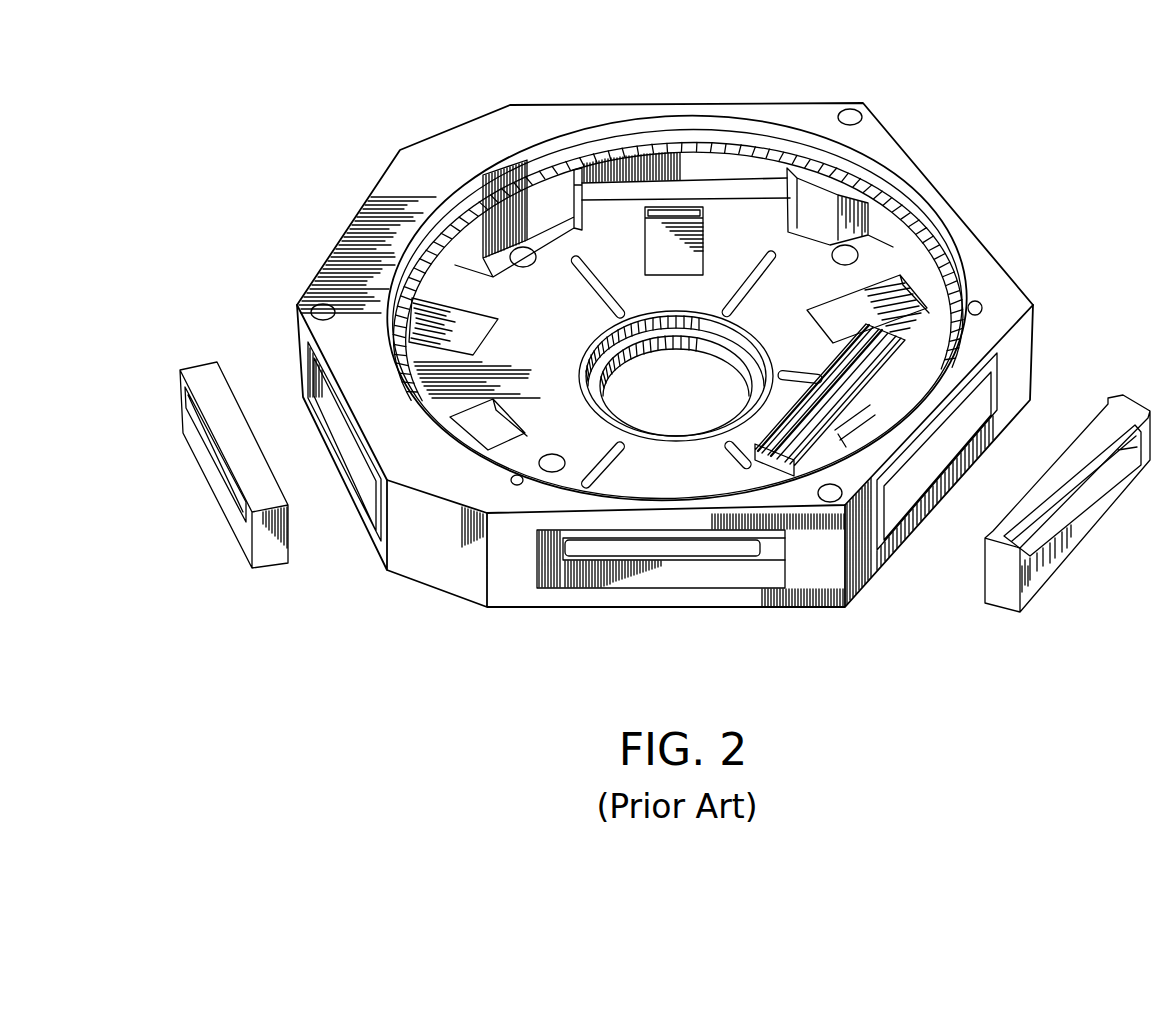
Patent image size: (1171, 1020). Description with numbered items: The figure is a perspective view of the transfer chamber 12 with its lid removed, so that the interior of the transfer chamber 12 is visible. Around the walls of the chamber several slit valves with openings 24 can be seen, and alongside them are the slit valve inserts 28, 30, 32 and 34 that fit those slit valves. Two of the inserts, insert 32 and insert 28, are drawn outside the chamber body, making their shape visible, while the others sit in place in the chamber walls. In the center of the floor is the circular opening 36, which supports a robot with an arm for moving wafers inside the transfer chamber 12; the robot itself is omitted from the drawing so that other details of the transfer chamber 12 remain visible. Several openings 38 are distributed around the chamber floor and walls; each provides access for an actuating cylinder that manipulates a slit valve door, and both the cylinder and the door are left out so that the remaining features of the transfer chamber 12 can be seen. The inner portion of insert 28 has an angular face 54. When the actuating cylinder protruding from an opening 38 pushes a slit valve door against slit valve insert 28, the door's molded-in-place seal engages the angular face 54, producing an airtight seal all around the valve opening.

The transfer chamber 12 is at (890, 130).
The slit valve openings 24 is at (673, 158).
The slit valve insert 28 is at (905, 398).
The slit valve insert 30 is at (740, 577).
The slit valve insert 32 is at (242, 553).
The slit valve insert 34 is at (918, 282).
The circular opening 36 is at (656, 402).
The openings 38 is at (676, 258).
The angular face 54 is at (1030, 563).